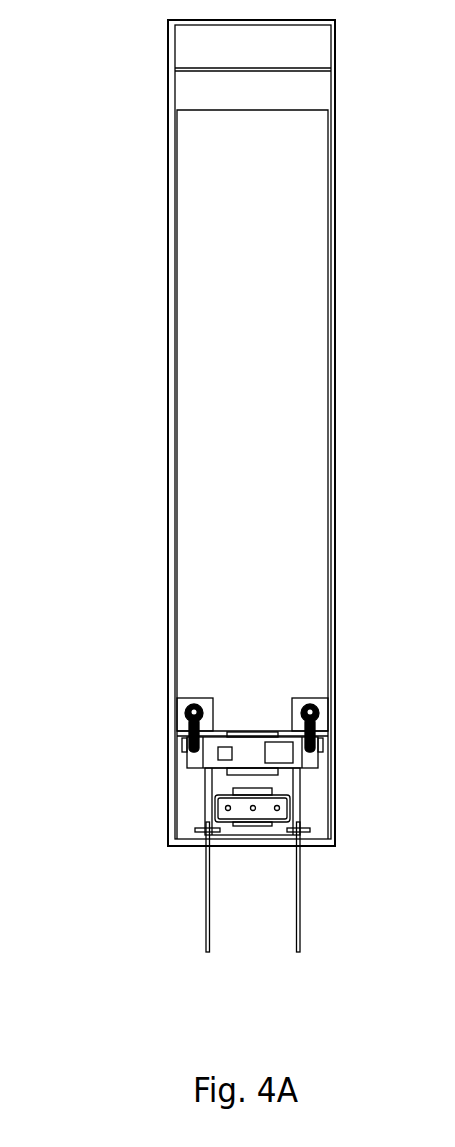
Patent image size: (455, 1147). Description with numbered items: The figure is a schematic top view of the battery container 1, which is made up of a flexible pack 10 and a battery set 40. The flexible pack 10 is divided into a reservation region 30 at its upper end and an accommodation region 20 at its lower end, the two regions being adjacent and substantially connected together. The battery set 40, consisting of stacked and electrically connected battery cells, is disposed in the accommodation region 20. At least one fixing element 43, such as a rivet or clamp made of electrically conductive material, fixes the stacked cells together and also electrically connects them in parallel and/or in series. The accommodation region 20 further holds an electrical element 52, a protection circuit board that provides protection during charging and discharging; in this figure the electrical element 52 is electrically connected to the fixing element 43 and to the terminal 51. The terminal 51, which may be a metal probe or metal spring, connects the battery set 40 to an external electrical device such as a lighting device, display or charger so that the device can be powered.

The battery container 1 is at (238, 483).
The flexible pack 10 is at (336, 25).
The reservation region 30 is at (185, 37).
The battery set 40 is at (307, 405).
The accommodation region 20 is at (249, 820).
The fixing element 43 is at (308, 688).
The electrical element 52 is at (190, 733).
The terminal 51 is at (280, 788).